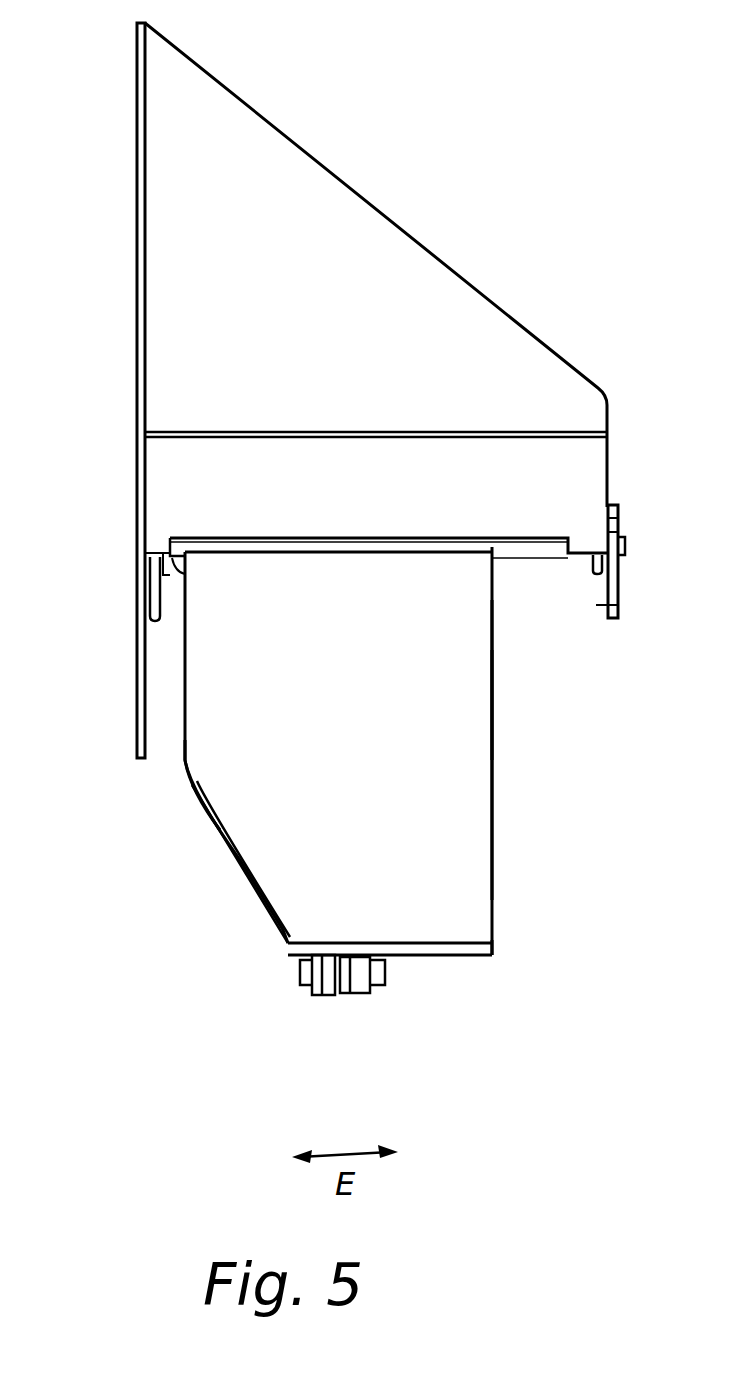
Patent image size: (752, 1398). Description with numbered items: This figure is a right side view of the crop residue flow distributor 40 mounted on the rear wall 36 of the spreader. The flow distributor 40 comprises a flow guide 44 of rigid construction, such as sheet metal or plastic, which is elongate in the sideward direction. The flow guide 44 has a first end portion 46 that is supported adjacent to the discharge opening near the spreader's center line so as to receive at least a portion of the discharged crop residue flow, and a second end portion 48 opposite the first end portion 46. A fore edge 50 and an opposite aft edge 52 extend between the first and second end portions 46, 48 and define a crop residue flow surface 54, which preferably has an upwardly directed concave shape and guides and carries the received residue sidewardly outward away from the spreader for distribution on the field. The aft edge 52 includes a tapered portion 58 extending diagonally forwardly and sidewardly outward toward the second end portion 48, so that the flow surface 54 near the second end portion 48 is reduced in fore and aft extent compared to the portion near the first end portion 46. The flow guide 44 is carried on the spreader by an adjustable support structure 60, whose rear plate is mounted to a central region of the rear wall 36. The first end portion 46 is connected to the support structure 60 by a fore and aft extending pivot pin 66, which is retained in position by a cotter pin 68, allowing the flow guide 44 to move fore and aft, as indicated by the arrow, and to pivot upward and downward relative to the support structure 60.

The rear wall 36 is at (140, 712).
The crop residue flow distributor 40 is at (493, 958).
The flow guide 44 is at (492, 805).
The first end portion 46 is at (327, 552).
The second end portion 48 is at (418, 948).
The fore edge 50 is at (492, 757).
The aft edge 52 is at (190, 783).
The crop residue flow surface 54 is at (440, 713).
The tapered portion 58 is at (230, 865).
The adjustable support structure 60 is at (522, 325).
The pivot pin 66 is at (622, 553).
The cotter pin 68 is at (620, 617).